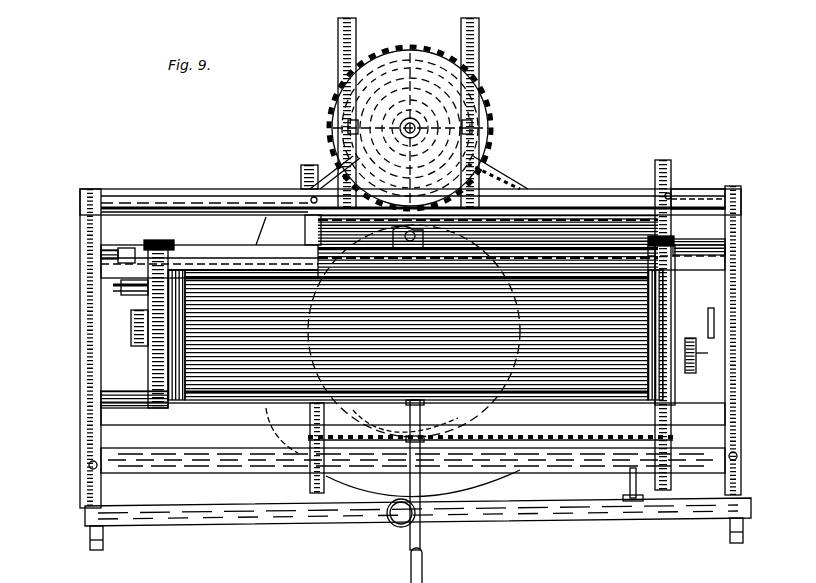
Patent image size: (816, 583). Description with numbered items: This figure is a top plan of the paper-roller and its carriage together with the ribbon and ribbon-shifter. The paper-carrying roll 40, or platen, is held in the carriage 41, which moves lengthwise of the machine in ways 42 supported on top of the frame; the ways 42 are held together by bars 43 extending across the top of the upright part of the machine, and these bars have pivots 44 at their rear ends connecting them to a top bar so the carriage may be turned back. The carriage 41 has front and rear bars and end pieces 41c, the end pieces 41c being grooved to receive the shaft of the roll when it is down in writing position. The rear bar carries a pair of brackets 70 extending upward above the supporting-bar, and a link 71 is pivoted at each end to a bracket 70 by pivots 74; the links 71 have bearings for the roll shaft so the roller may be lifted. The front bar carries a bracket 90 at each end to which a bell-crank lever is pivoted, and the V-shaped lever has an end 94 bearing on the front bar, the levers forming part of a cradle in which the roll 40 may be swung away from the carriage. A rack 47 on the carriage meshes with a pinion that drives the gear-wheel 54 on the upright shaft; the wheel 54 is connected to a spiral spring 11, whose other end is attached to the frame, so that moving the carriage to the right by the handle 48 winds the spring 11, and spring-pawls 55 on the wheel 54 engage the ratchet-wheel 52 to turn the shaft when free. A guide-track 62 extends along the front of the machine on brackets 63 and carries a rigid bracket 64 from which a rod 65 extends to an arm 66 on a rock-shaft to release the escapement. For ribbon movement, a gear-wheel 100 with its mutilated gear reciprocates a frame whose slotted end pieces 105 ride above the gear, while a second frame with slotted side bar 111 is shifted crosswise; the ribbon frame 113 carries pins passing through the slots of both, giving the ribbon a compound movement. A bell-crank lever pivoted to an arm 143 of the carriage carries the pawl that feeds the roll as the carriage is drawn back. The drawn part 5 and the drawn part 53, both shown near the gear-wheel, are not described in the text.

The frame bar 5 is at (243, 227).
The spiral spring 11 is at (425, 55).
The paper-carrying roll 40 is at (382, 331).
The carriage 41 is at (272, 262).
The end pieces 41c is at (140, 350).
The ways 42 is at (232, 252).
The bars 43 is at (72, 323).
The pivots 44 is at (72, 201).
The rack 47 is at (418, 232).
The handle 48 is at (403, 556).
The ratchet-wheel 52 is at (348, 98).
The disc 53 is at (410, 108).
The gear-wheel 54 is at (478, 96).
The spring-pawls 55 is at (325, 120).
The guide-track 62 is at (258, 500).
The brackets 63 is at (429, 533).
The bracket 64 is at (625, 493).
The rod 65 is at (622, 468).
The arm 66 is at (390, 510).
The brackets 70 is at (146, 236).
The links 71 is at (160, 242).
The pivots 74 is at (118, 240).
The bracket 90 is at (413, 447).
The lever end 94 is at (277, 429).
The gear-wheel 100 is at (423, 453).
The end pieces 105 is at (300, 170).
The side bar 111 is at (684, 181).
The ribbon frame 113 is at (488, 312).
The arm 143 is at (125, 291).